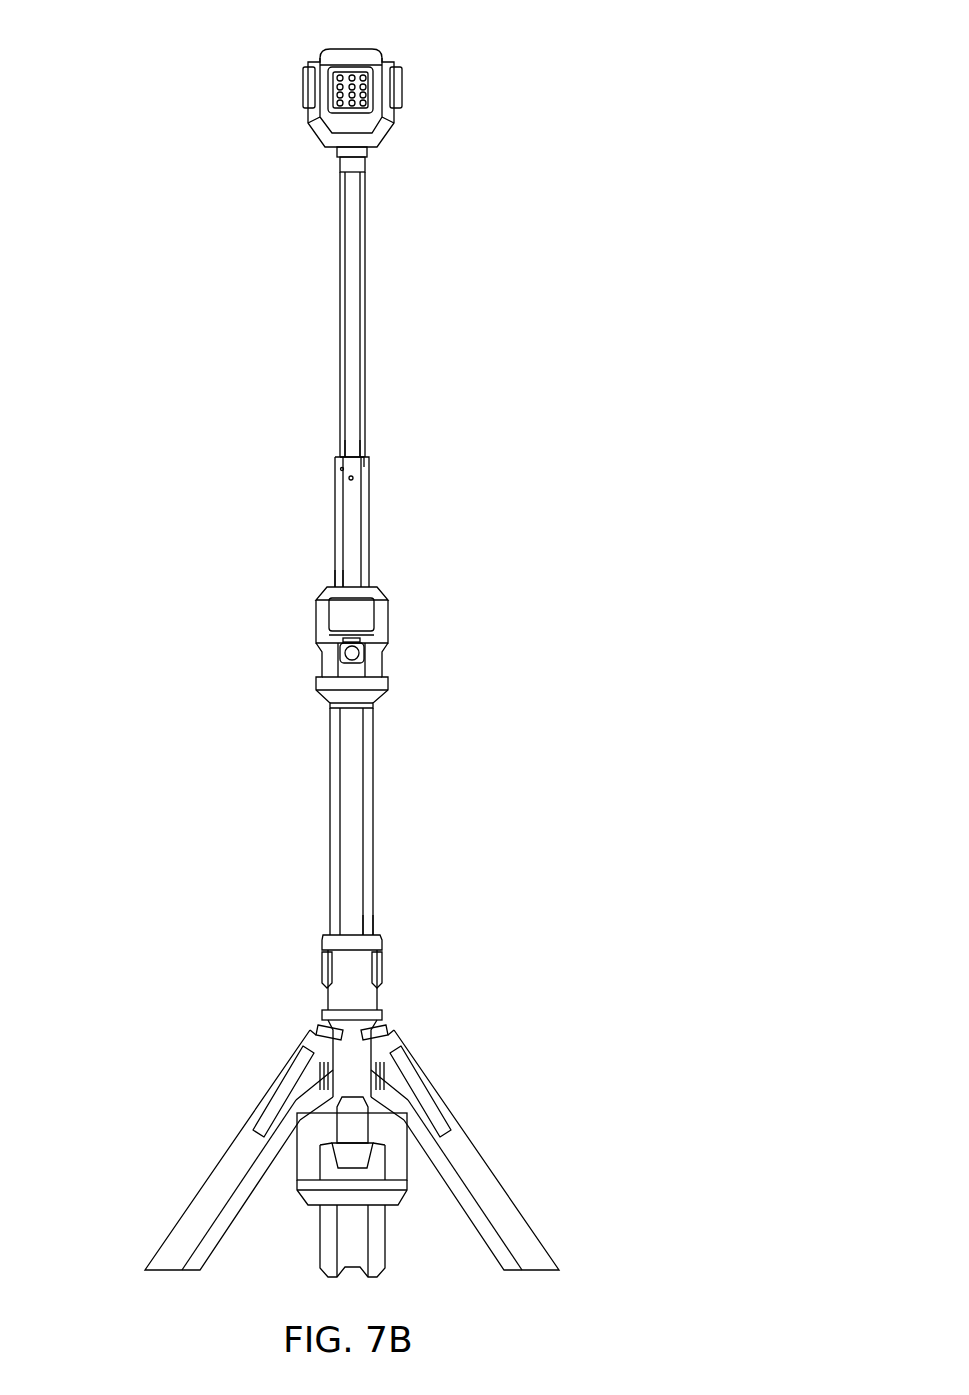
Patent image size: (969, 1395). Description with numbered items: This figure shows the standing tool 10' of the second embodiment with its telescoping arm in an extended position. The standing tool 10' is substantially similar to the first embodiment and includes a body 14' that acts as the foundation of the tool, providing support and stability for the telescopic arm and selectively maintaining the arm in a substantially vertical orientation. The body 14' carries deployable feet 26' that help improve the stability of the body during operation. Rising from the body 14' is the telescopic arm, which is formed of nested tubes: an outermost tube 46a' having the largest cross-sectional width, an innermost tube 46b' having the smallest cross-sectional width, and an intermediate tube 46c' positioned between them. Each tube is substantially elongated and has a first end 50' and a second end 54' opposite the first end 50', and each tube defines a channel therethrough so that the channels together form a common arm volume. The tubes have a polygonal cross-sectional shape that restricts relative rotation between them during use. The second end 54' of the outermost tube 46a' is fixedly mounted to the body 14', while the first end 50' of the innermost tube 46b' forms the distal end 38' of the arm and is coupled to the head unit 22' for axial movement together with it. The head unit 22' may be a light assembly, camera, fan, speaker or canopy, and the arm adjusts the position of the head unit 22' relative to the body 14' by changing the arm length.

The standing tool 10' is at (594, 293).
The head unit 22' is at (355, 76).
The distal end 38' is at (325, 176).
The first end 50' is at (381, 378).
The outermost tube 46a' is at (390, 821).
The innermost tube 46b' is at (393, 314).
The intermediate tube 46c' is at (394, 522).
The second end 54' is at (361, 678).
The deployable feet 26' is at (352, 1147).
The body 14' is at (369, 1187).